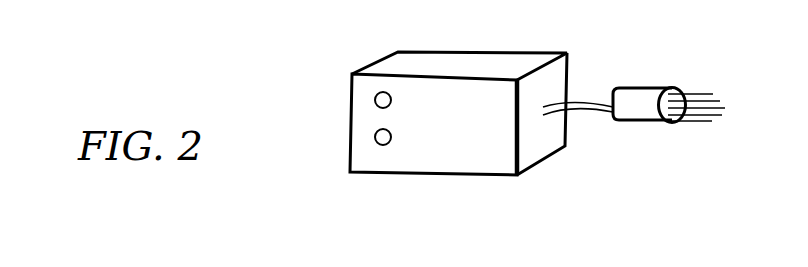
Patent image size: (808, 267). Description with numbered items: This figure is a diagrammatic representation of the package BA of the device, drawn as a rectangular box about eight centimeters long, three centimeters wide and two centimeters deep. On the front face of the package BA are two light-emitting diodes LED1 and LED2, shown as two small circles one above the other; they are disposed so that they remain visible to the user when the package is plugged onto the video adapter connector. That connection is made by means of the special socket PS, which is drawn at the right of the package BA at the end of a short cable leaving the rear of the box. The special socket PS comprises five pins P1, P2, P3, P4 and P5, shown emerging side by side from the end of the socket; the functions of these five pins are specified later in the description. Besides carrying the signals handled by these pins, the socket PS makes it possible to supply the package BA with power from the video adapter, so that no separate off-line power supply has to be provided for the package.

The package BA is at (499, 183).
The light-emitting diode LED1 is at (374, 101).
The light-emitting diode LED2 is at (374, 138).
The special socket PS is at (654, 81).
The pin P1 is at (713, 94).
The pin P2 is at (720, 101).
The pin P3 is at (725, 108).
The pin P4 is at (722, 115).
The pin P5 is at (712, 121).